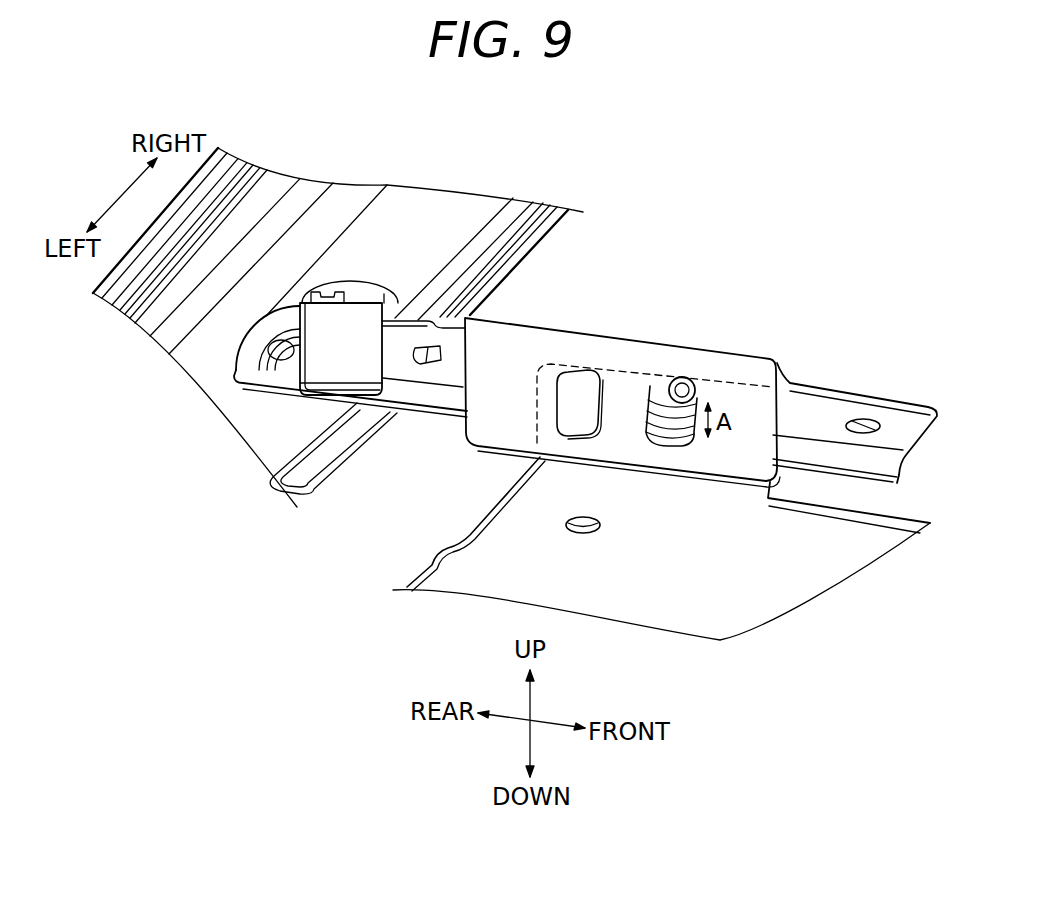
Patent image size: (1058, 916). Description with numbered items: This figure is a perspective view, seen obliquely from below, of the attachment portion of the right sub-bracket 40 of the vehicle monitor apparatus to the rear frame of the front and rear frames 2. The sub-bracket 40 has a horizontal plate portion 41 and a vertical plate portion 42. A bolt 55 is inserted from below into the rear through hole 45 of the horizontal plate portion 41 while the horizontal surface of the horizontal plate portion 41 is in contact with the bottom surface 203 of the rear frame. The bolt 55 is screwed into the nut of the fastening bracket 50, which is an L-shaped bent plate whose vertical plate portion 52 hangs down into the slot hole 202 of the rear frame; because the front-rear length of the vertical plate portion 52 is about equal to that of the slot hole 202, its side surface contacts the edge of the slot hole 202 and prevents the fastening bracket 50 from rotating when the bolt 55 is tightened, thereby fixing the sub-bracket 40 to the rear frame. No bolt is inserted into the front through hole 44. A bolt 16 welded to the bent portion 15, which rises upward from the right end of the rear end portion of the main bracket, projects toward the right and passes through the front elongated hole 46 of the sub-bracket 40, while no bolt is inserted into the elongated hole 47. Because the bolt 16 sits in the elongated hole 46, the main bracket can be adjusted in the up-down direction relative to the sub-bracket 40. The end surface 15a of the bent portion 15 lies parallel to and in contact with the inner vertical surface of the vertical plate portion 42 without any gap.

The front and rear frames 2 is at (223, 388).
The bottom surface 203 is at (438, 202).
The slot hole 202 is at (386, 300).
The fastening bracket 50 is at (342, 324).
The vertical plate portion 52 is at (363, 370).
The bolt 55 is at (288, 352).
The rear through hole 45 is at (285, 335).
The bent portion 15 is at (723, 384).
The end surface 15a is at (577, 410).
The bolt 16 is at (682, 377).
The front elongated hole 46 is at (670, 440).
The elongated hole 47 is at (597, 413).
The horizontal plate portion 41 is at (828, 392).
The sub-bracket 40 is at (925, 405).
The front through hole 44 is at (870, 422).
The vertical plate portion 42 is at (738, 462).